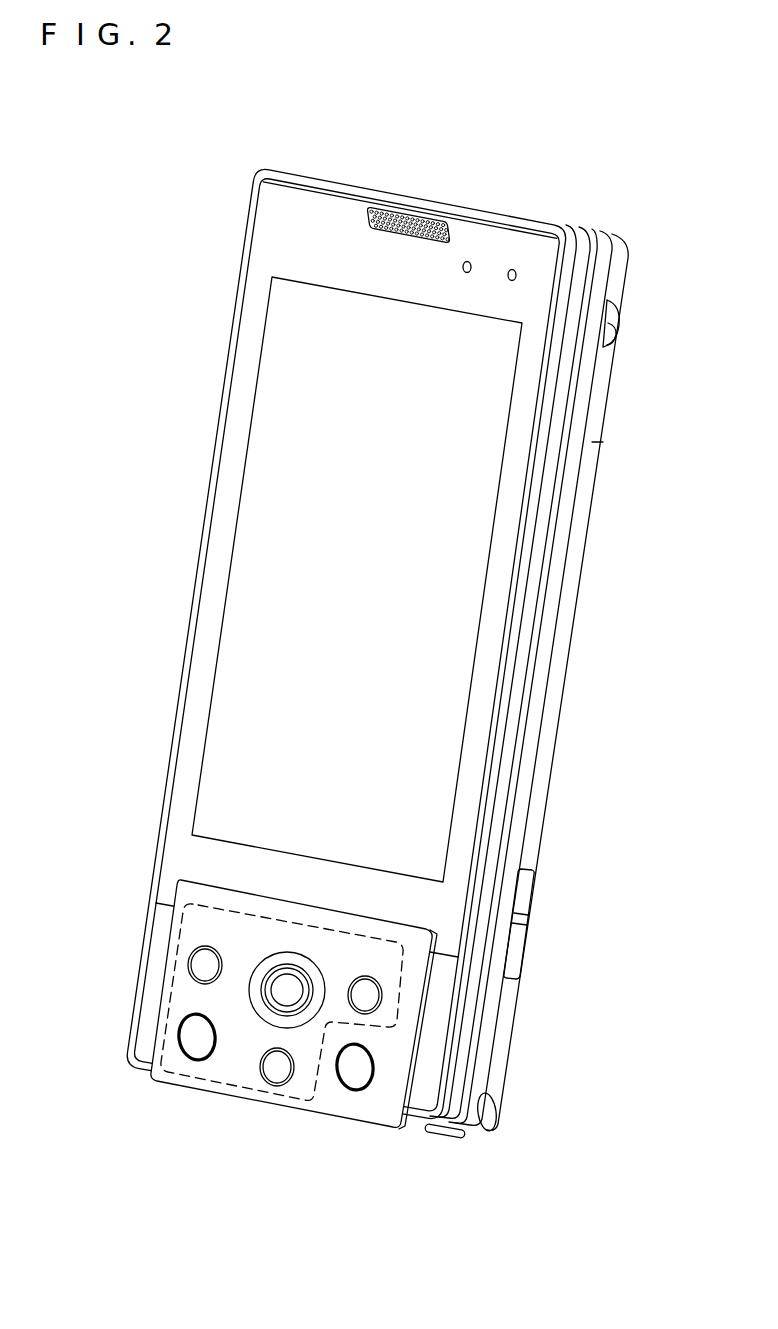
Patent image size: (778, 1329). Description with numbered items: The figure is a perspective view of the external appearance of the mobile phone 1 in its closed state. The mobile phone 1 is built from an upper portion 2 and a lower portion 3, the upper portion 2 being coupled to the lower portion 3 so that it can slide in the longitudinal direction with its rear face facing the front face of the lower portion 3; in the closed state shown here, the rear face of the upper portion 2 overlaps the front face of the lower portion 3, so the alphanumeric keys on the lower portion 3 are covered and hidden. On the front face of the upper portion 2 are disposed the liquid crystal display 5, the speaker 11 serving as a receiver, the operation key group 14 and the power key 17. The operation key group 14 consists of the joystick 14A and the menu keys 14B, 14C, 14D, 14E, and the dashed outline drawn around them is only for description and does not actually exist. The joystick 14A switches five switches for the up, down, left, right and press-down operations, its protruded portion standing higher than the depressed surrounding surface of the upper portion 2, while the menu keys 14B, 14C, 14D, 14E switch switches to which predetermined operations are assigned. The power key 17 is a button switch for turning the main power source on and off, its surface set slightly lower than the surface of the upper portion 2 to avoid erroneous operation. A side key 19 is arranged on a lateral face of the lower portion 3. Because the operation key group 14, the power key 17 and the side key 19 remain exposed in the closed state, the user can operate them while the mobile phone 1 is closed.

The mobile phone 1 is at (668, 163).
The upper portion 2 is at (283, 245).
The lower portion 3 is at (510, 1030).
The liquid crystal display (LCD) 5 is at (410, 541).
The speaker 11 is at (408, 218).
The operation key group 14 is at (172, 976).
The joystick 14A is at (285, 982).
The menu key 14B is at (200, 958).
The menu key 14C is at (365, 986).
The menu key 14D is at (192, 1046).
The menu key 14E is at (271, 1075).
The power key 17 is at (352, 1080).
The side key 19 is at (524, 895).